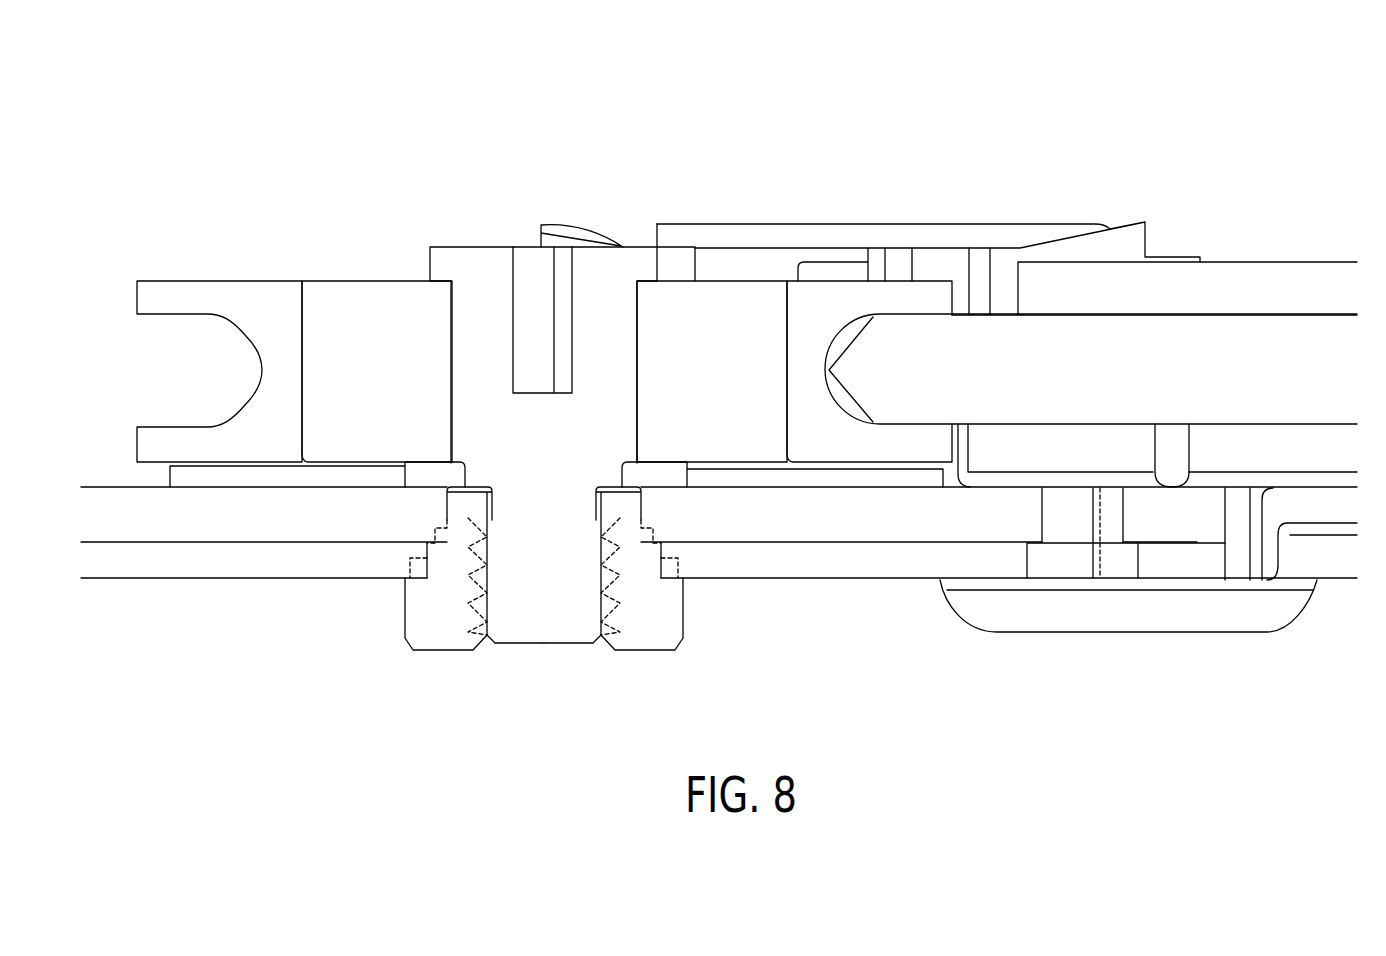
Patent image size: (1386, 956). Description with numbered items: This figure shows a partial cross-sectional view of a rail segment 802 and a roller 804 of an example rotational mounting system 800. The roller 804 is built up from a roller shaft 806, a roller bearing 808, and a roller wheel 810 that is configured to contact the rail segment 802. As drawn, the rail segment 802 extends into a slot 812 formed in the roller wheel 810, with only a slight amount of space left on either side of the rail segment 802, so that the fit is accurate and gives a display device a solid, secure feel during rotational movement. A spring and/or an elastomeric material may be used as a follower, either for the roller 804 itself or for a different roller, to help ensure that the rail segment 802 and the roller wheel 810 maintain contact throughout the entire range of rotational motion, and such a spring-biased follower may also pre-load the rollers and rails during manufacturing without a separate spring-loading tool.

The rotational mounting system 800 is at (719, 354).
The rail segment 802 is at (1235, 315).
The roller 804 is at (544, 264).
The roller shaft 806 is at (468, 247).
The roller bearing 808 is at (387, 280).
The roller wheel 810 is at (950, 147).
The slot 812 is at (850, 362).